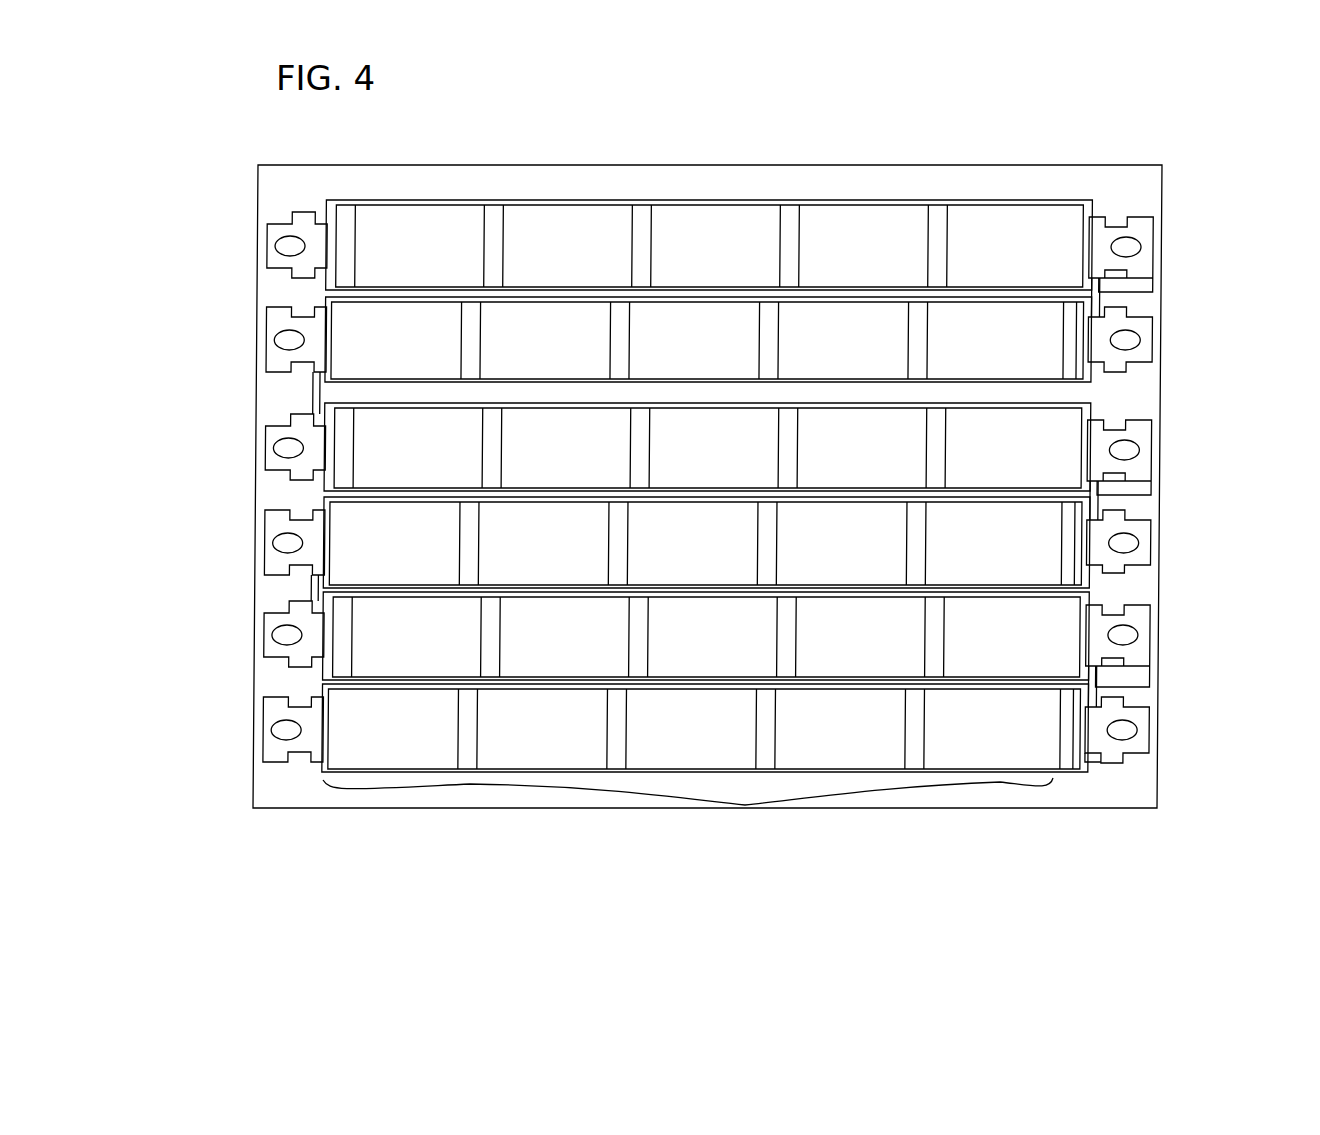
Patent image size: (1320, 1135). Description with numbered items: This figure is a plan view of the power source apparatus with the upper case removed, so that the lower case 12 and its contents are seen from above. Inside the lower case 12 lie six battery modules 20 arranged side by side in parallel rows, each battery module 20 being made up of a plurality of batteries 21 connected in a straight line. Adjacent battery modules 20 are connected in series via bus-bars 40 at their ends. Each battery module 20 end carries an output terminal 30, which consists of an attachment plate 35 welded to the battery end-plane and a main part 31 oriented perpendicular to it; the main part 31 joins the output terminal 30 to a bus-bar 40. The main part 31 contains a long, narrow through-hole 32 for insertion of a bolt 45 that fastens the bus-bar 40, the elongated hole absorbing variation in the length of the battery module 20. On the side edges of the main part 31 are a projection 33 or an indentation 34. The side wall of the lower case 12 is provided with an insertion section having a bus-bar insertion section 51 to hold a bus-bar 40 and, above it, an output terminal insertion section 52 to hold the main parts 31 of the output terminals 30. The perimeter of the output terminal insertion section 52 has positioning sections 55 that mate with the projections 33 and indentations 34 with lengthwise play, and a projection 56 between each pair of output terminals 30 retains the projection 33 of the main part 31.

The lower case 12 is at (1097, 810).
The battery module 20 is at (688, 812).
The battery 21 is at (568, 742).
The output terminal 30 is at (383, 695).
The main part 31 is at (313, 723).
The through-hole 32 is at (1130, 633).
The projection 33 is at (1108, 763).
The indentation 34 is at (280, 702).
The attachment plate 35 is at (327, 738).
The bus-bar 40 is at (1140, 695).
The bolt 45 is at (1153, 613).
The bus-bar insertion section 51 is at (1153, 677).
The output terminal insertion section 52 is at (258, 732).
The positioning section 55 is at (297, 700).
The projection 56 is at (1089, 688).